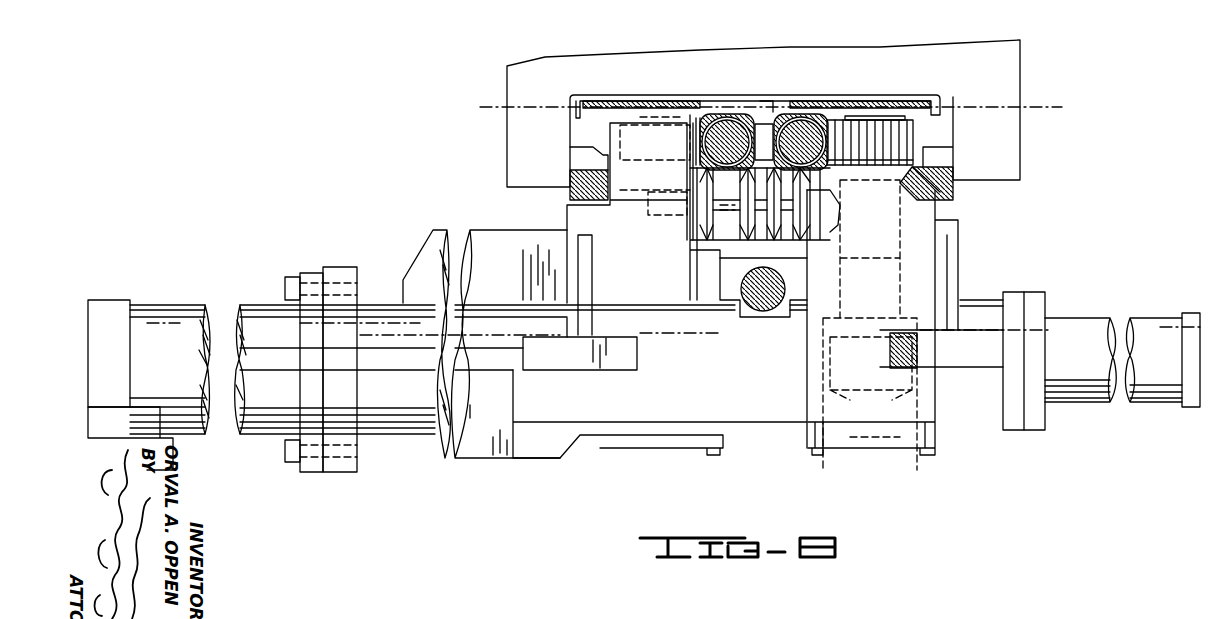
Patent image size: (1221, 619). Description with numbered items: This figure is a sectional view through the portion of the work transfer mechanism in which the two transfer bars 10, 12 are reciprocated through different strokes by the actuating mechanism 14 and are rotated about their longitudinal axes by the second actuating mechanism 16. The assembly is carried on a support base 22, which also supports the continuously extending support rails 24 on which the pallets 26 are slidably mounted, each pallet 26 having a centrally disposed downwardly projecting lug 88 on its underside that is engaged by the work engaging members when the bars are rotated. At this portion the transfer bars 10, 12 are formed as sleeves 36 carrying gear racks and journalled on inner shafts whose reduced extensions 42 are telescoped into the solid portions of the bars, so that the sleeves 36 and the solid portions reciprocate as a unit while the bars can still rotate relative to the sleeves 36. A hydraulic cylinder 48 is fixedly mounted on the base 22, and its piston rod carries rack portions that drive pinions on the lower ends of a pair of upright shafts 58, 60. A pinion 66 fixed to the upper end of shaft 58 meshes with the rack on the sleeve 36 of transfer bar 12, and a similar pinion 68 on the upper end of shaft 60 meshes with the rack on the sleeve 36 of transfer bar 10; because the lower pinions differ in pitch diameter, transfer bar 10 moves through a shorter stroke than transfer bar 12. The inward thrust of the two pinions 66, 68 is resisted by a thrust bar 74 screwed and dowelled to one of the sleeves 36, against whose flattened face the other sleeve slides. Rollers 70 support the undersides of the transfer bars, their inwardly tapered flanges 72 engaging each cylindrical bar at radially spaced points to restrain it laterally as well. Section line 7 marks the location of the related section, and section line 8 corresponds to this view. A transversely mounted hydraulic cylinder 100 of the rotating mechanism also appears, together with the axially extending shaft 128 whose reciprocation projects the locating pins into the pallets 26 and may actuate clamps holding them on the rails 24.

The section line 7- 7 is at (495, 98).
The section line 8-8 / shaft 8 is at (483, 320).
The transfer bar 10 is at (806, 120).
The transfer bar 12 is at (727, 118).
The actuating mechanism 14 is at (217, 298).
The second actuating mechanism 16 is at (1104, 315).
The support base 22 is at (578, 220).
The support rail 24 is at (581, 168).
The pallet 26 is at (1012, 58).
The sleeve 36 is at (702, 165).
The reduced extension 42 is at (740, 118).
The hydraulic cylinder 48 is at (387, 304).
The upright shaft 58 is at (653, 101).
The upright shaft 60 is at (868, 118).
The pinion 66 is at (694, 121).
The pinion 68 is at (898, 118).
The roller 70 is at (735, 215).
The inwardly tapered flange 72 is at (712, 243).
The thrust bar 74 is at (768, 142).
The lug 88 is at (774, 100).
The hydraulic cylinder 100 is at (1162, 393).
The shaft 128 is at (769, 306).